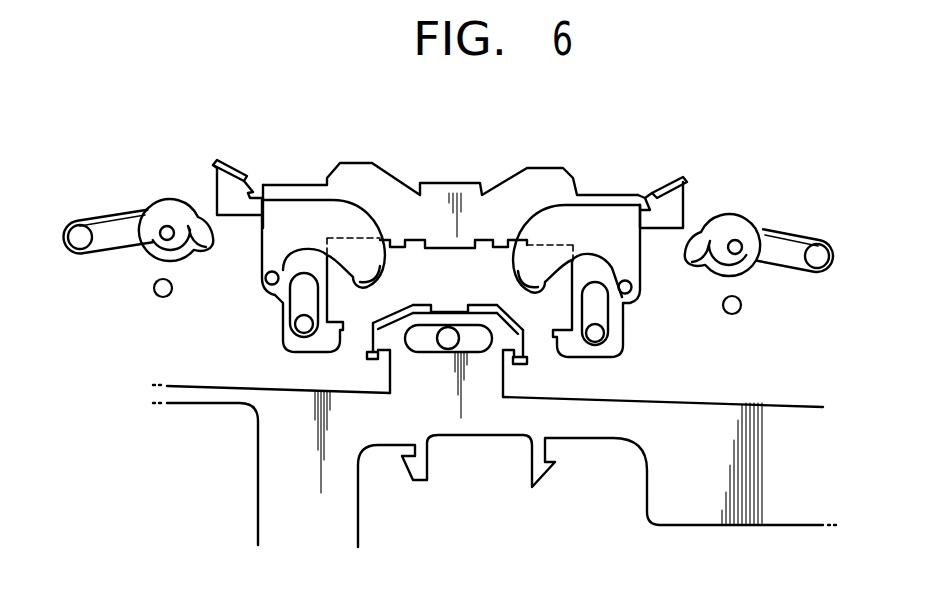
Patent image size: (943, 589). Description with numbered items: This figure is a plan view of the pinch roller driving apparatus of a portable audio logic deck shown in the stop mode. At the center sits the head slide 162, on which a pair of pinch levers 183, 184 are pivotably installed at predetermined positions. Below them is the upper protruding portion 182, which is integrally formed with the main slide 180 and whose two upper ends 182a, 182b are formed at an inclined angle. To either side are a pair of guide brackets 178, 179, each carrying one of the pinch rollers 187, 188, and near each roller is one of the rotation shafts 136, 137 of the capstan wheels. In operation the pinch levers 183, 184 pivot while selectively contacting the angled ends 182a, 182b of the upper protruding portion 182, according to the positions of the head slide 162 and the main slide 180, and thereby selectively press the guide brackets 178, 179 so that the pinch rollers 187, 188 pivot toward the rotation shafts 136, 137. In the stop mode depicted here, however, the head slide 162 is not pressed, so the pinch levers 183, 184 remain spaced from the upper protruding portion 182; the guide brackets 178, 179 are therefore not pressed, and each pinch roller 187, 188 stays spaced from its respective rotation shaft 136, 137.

The rotation shaft 136 is at (158, 293).
The rotation shaft 137 is at (727, 311).
The head slide 162 is at (532, 190).
The guide bracket 178 is at (115, 230).
The guide bracket 179 is at (782, 245).
The main slide 180 is at (712, 422).
The upper protruding portion 182 is at (427, 336).
The end of upper protruding portion 182a is at (393, 307).
The end of upper protruding portion 182b is at (525, 331).
The pinch lever 183 is at (312, 220).
The pinch lever 184 is at (603, 230).
The pinch roller 187 is at (183, 250).
The pinch roller 188 is at (743, 263).